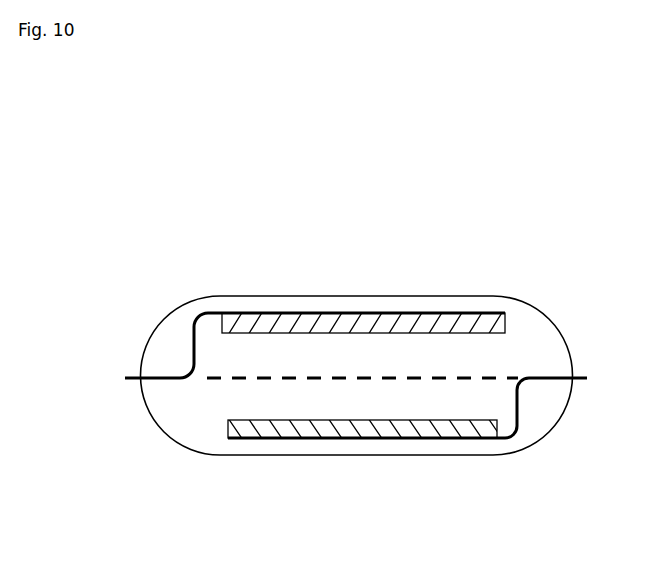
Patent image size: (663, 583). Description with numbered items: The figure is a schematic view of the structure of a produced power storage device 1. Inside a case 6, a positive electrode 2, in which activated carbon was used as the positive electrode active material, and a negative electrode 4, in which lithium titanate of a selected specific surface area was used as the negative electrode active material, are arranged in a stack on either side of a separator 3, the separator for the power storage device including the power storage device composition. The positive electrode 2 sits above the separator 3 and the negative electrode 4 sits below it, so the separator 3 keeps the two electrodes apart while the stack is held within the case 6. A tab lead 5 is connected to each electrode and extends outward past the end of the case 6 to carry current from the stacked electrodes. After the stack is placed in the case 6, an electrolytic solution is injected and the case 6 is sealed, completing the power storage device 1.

The power storage device 1 is at (542, 212).
The positive electrode 2 is at (383, 316).
The separator 3 is at (485, 378).
The negative electrode 4 is at (429, 432).
The tab lead 5 is at (193, 352).
The case 6 is at (236, 455).